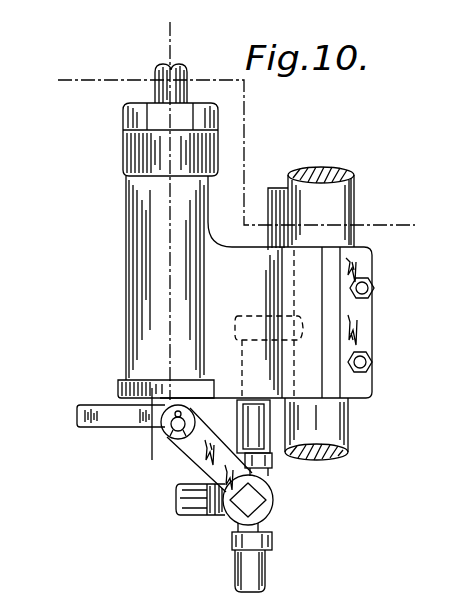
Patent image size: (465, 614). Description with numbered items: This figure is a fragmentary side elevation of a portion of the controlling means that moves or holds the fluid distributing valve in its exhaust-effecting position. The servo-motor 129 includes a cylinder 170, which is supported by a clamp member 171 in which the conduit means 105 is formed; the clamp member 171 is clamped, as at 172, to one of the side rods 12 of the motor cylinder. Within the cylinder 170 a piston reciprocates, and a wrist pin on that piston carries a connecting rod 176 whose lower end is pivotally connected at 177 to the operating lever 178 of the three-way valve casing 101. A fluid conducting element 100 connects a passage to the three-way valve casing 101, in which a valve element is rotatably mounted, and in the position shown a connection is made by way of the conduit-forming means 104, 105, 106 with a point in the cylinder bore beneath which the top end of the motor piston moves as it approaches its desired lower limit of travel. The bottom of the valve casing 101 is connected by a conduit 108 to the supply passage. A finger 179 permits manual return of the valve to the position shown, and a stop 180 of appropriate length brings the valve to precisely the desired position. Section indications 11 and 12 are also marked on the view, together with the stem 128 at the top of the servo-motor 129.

The section line 11- 11 is at (68, 64).
The side rod 12 is at (198, 32).
The fluid conducting element 100 is at (192, 498).
The three-way valve casing 101 is at (272, 528).
The conduit-forming means 104 is at (262, 430).
The conduit means 105 is at (344, 316).
The conduit-forming means 106 is at (282, 188).
The conduit 108 is at (258, 573).
The stem 128 is at (160, 68).
The servo-motor 129 is at (124, 222).
The cylinder 170 is at (126, 280).
The clamp member 171 is at (322, 343).
The clamp 172 is at (370, 364).
The connecting rod 176 is at (190, 404).
The pivotal connection 177 is at (166, 427).
The operating lever 178 is at (233, 466).
The finger 179 is at (77, 415).
The stop 180 is at (124, 401).